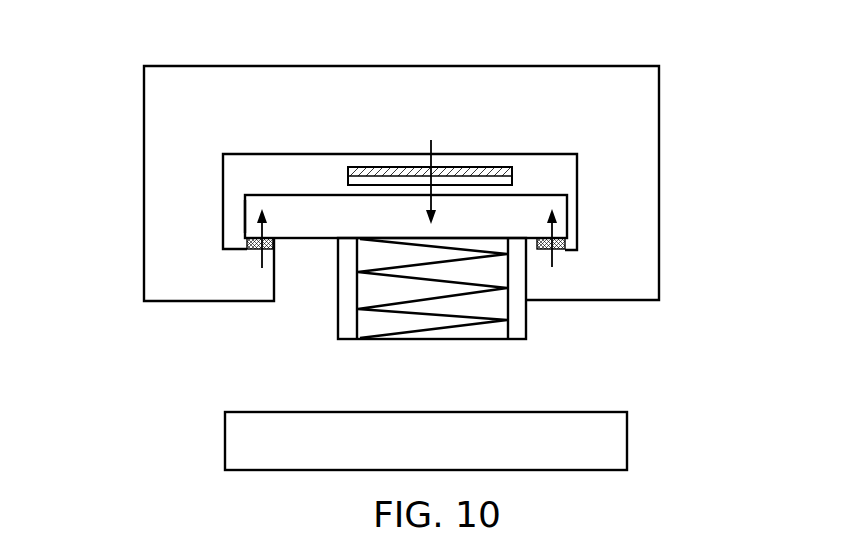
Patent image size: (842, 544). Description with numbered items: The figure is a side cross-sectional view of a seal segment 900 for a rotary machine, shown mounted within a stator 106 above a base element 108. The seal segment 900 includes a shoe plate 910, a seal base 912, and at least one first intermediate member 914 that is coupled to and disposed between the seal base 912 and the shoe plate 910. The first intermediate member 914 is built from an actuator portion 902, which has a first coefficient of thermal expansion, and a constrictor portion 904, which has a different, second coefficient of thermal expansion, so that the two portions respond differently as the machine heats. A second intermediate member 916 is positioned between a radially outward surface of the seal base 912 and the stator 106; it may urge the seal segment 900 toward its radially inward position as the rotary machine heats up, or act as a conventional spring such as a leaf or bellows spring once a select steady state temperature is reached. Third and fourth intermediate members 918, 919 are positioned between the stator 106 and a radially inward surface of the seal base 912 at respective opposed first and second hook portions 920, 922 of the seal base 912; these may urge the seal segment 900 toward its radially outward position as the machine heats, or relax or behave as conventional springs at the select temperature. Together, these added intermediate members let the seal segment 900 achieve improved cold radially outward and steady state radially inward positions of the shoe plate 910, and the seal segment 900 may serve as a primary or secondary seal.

The seal segment 900 is at (228, 42).
The stator 106 is at (659, 87).
The substrate 108 is at (225, 444).
The actuator portion 902 is at (470, 282).
The constrictor portion 904 is at (527, 315).
The shoe plate 910 is at (340, 341).
The seal base 912 is at (245, 182).
The first intermediate member 914 is at (322, 241).
The second intermediate member 916 is at (526, 170).
The third intermediate member 918 is at (245, 242).
The fourth intermediate member 919 is at (566, 240).
The first hook portion 920 is at (570, 208).
The second hook portion 922 is at (245, 213).